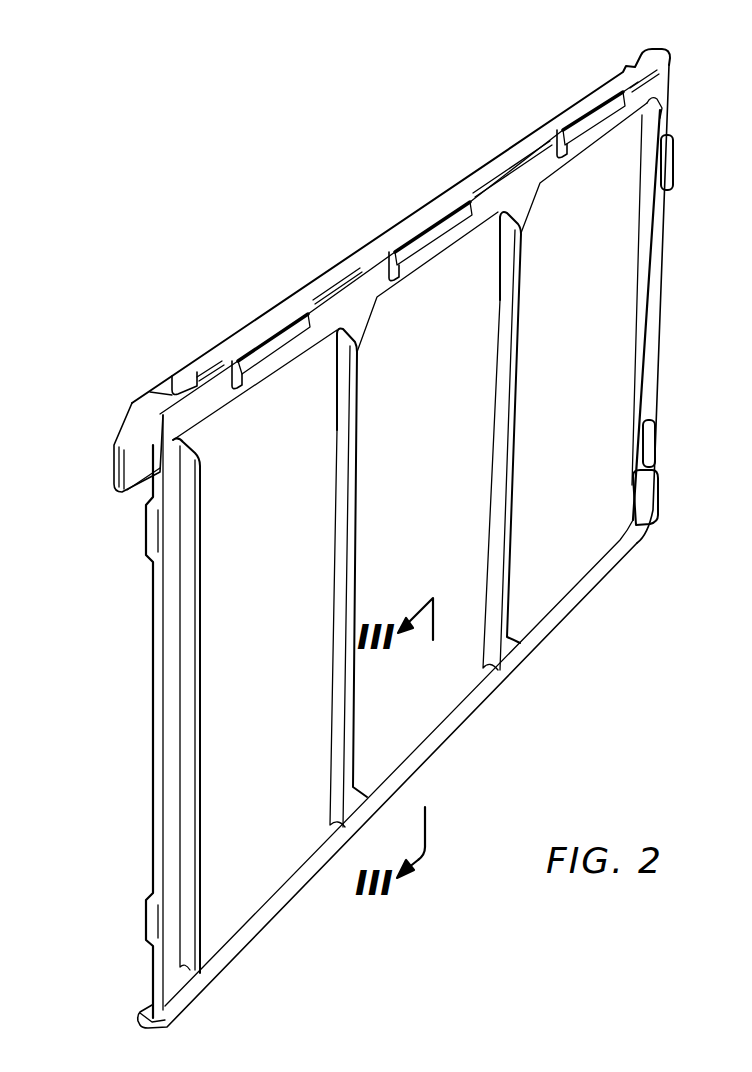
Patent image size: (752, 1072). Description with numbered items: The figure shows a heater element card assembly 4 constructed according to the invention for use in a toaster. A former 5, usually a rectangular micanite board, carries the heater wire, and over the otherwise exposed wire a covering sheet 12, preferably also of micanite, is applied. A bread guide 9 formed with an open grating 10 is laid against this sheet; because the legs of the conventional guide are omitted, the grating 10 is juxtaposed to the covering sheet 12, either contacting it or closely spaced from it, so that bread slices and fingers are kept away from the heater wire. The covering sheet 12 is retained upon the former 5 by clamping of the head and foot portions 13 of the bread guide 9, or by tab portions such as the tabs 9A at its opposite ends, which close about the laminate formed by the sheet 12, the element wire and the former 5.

The electrical heater element card assembly 4 is at (147, 610).
The former 5 is at (117, 438).
The bread guide 9 is at (522, 139).
The tabs 9A is at (638, 60).
The open grating 10 is at (503, 313).
The covering sheet 12 is at (440, 482).
The head and foot portions 13 is at (343, 272).